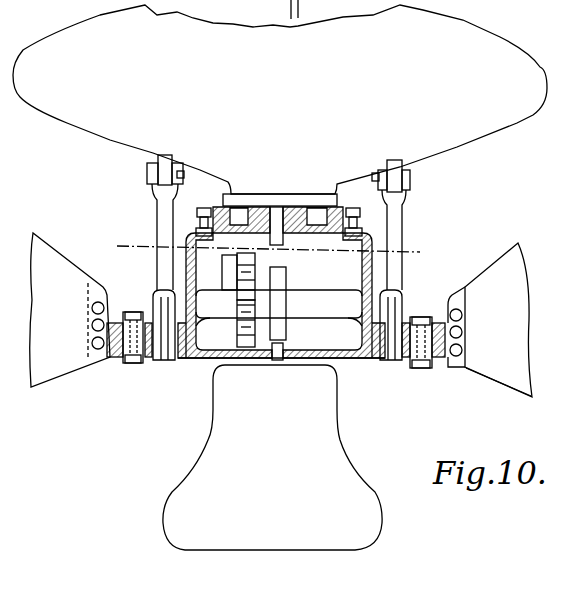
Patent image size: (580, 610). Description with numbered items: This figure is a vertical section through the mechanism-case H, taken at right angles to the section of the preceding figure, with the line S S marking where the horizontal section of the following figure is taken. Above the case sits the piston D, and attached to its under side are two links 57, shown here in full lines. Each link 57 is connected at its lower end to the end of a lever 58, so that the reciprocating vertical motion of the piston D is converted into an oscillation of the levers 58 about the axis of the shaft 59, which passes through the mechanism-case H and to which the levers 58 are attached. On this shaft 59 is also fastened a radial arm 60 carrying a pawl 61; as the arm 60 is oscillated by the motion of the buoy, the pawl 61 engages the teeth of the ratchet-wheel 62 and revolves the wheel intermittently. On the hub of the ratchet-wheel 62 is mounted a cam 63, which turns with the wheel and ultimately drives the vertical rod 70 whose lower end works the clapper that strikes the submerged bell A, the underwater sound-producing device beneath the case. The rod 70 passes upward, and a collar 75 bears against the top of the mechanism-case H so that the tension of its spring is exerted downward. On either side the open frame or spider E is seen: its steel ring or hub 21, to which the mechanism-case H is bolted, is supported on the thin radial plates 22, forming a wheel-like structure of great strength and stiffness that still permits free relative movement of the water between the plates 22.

The piston D is at (515, 121).
The vertical rod 70 is at (307, 197).
The links 57 is at (163, 224).
The levers 58 is at (157, 323).
The steel ring or hub 21 is at (440, 368).
The radial plates 22 is at (493, 371).
The open frame or spider E is at (88, 312).
The shaft 59 is at (327, 300).
The mechanism-case H is at (366, 262).
The collar 75 is at (292, 235).
The cam 63 is at (281, 280).
The radial arm 60 is at (224, 284).
The pawl 61 is at (245, 267).
The ratchet-wheel 62 is at (243, 335).
The section line S is at (265, 250).
The underwater sound-producing device A is at (272, 457).